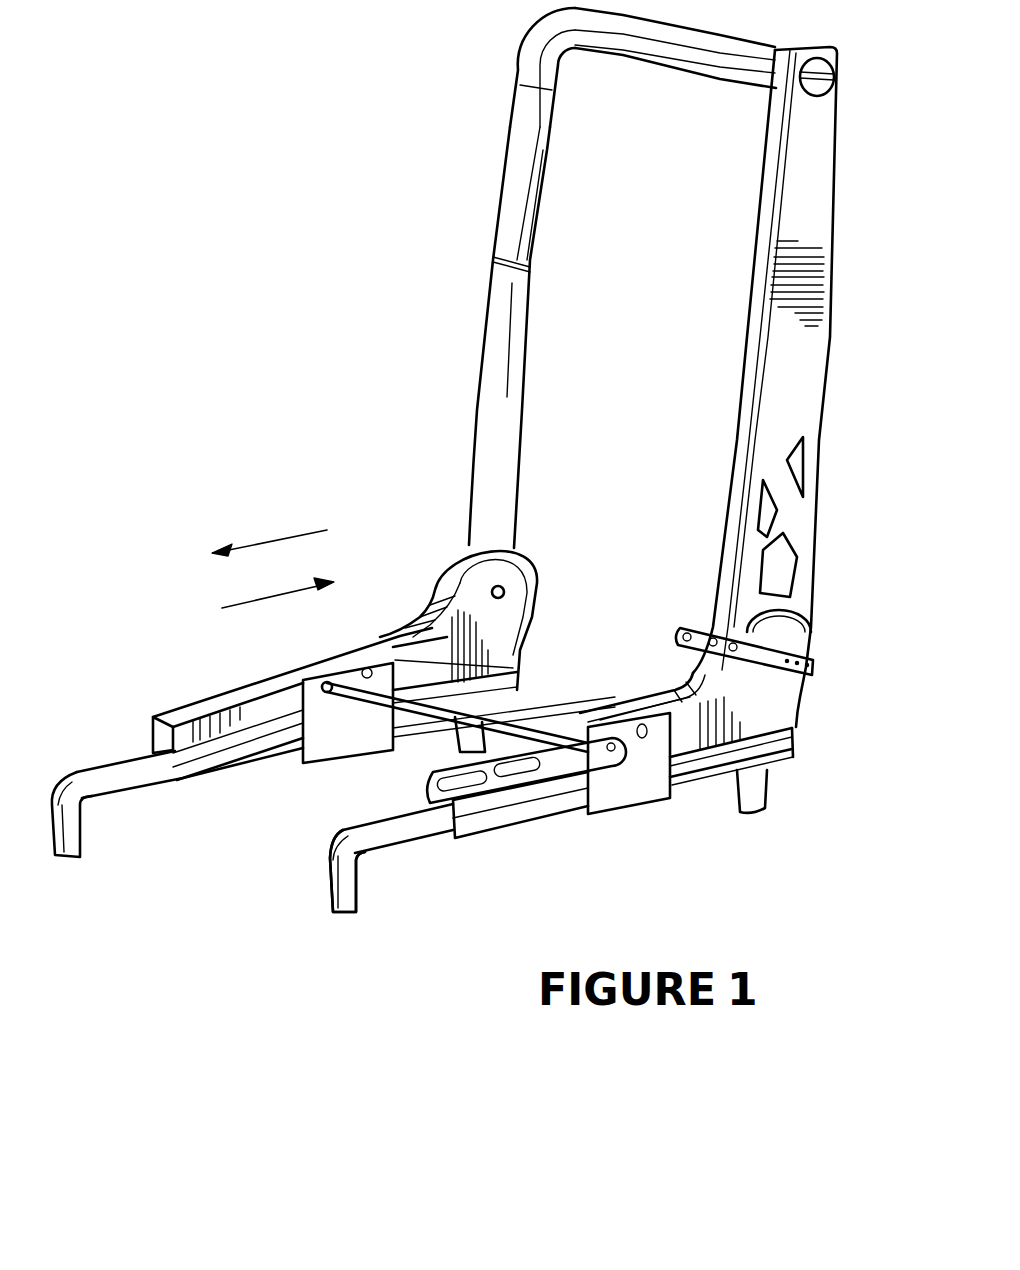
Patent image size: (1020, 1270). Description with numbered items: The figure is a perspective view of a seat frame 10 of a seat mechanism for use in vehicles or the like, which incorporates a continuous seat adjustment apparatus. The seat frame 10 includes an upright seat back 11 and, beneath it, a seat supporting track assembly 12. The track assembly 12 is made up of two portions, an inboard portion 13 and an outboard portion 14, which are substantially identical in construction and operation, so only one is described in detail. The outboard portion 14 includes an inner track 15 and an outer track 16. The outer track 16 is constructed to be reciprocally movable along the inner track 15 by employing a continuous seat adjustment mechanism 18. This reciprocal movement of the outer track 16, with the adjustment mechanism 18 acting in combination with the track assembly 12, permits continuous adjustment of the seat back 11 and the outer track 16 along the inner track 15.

The seat frame 10 is at (412, 370).
The seat back 11 is at (737, 378).
The seat supporting track assembly 12 is at (291, 944).
The inboard portion 13 is at (218, 797).
The outboard portion 14 is at (460, 930).
The inner track 15 is at (377, 853).
The outer track 16 is at (513, 825).
The continuous seat adjustment mechanism 18 is at (637, 788).